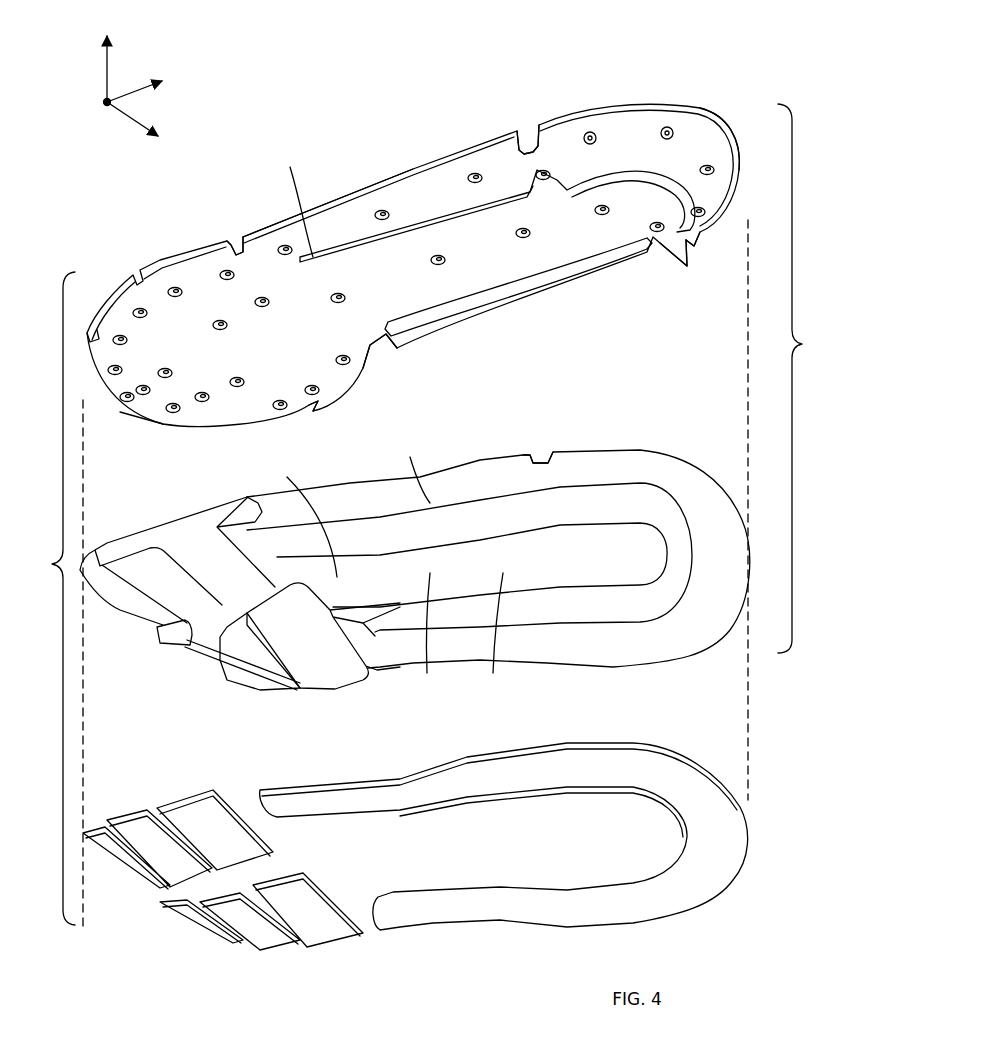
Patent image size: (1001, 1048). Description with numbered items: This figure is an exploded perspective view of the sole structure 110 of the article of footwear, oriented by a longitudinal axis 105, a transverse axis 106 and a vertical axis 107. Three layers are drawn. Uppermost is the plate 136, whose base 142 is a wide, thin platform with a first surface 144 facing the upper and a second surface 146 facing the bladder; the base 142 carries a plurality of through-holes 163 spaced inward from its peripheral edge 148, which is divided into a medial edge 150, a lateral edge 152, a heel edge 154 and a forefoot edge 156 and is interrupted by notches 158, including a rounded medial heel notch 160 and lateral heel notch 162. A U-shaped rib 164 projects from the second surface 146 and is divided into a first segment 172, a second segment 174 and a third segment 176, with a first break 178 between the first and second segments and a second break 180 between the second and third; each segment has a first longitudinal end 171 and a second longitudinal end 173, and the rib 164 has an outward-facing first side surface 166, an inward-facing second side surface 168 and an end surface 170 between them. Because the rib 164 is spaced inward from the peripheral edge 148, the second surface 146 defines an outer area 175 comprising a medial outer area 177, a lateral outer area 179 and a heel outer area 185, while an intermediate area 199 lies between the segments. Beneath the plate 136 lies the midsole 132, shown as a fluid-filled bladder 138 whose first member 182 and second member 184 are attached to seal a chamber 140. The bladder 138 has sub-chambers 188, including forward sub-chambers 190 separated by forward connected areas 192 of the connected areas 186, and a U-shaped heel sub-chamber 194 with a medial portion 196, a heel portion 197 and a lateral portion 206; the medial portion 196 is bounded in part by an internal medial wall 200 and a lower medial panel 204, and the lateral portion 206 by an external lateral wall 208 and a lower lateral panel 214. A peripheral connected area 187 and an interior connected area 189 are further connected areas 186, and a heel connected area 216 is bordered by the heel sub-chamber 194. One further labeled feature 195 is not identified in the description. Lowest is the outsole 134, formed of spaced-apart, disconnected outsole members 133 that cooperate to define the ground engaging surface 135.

The longitudinal axis 105 is at (155, 83).
The transverse axis 106 is at (150, 131).
The vertical axis 107 is at (110, 58).
The sole structure 110 is at (43, 598).
The midsole 132 is at (757, 815).
The outsole members 133 is at (257, 797).
The outsole 134 is at (812, 378).
The ground engaging surface 135 is at (428, 792).
The plate 136 is at (177, 247).
The fluid-filled bladder 138 is at (484, 450).
The chamber 140 is at (356, 500).
The base 142 is at (327, 223).
The first surface 144 is at (420, 167).
The second surface 146 is at (364, 295).
The peripheral edge 148 is at (260, 224).
The medial edge 150 is at (423, 337).
The lateral edge 152 is at (380, 187).
The heel edge 154 is at (723, 130).
The forefoot edge 156 is at (107, 400).
The notches 158 is at (236, 242).
The medial heel notch 160 is at (680, 247).
The lateral heel notch 162 is at (523, 127).
The through-holes 163 is at (463, 170).
The rib 164 is at (453, 227).
The first side surface 166 is at (570, 173).
The second side surface 168 is at (520, 280).
The end surface 170 is at (617, 180).
The first longitudinal end 171 is at (318, 402).
The first segment 172 is at (563, 273).
The second longitudinal end 173 is at (647, 243).
The second segment 174 is at (683, 187).
The outer area 175 is at (614, 142).
The third segment 176 is at (293, 201).
The medial outer area 177 is at (470, 313).
The first break 178 is at (657, 247).
The lateral outer area 179 is at (565, 137).
The second break 180 is at (537, 187).
The first member 182 is at (575, 455).
The second member 184 is at (632, 650).
The heel outer area 185 is at (700, 150).
The connected areas 186 is at (303, 512).
The peripheral connected area 187 is at (411, 467).
The sub-chambers 188 is at (150, 540).
The interior connected area 189 is at (425, 633).
The forward sub-chambers 190 is at (173, 650).
The forward connected areas 192 is at (222, 607).
The heel sub-chamber 194 is at (630, 498).
The forefoot block 195 is at (337, 617).
The medial portion 196 is at (547, 653).
The heel portion 197 is at (747, 525).
The intermediate area 199 is at (550, 232).
The internal medial wall 200 is at (551, 613).
The lower medial panel 204 is at (567, 654).
The lateral portion 206 is at (530, 462).
The external lateral wall 208 is at (459, 475).
The lower lateral panel 214 is at (492, 514).
The heel connected area 216 is at (497, 633).